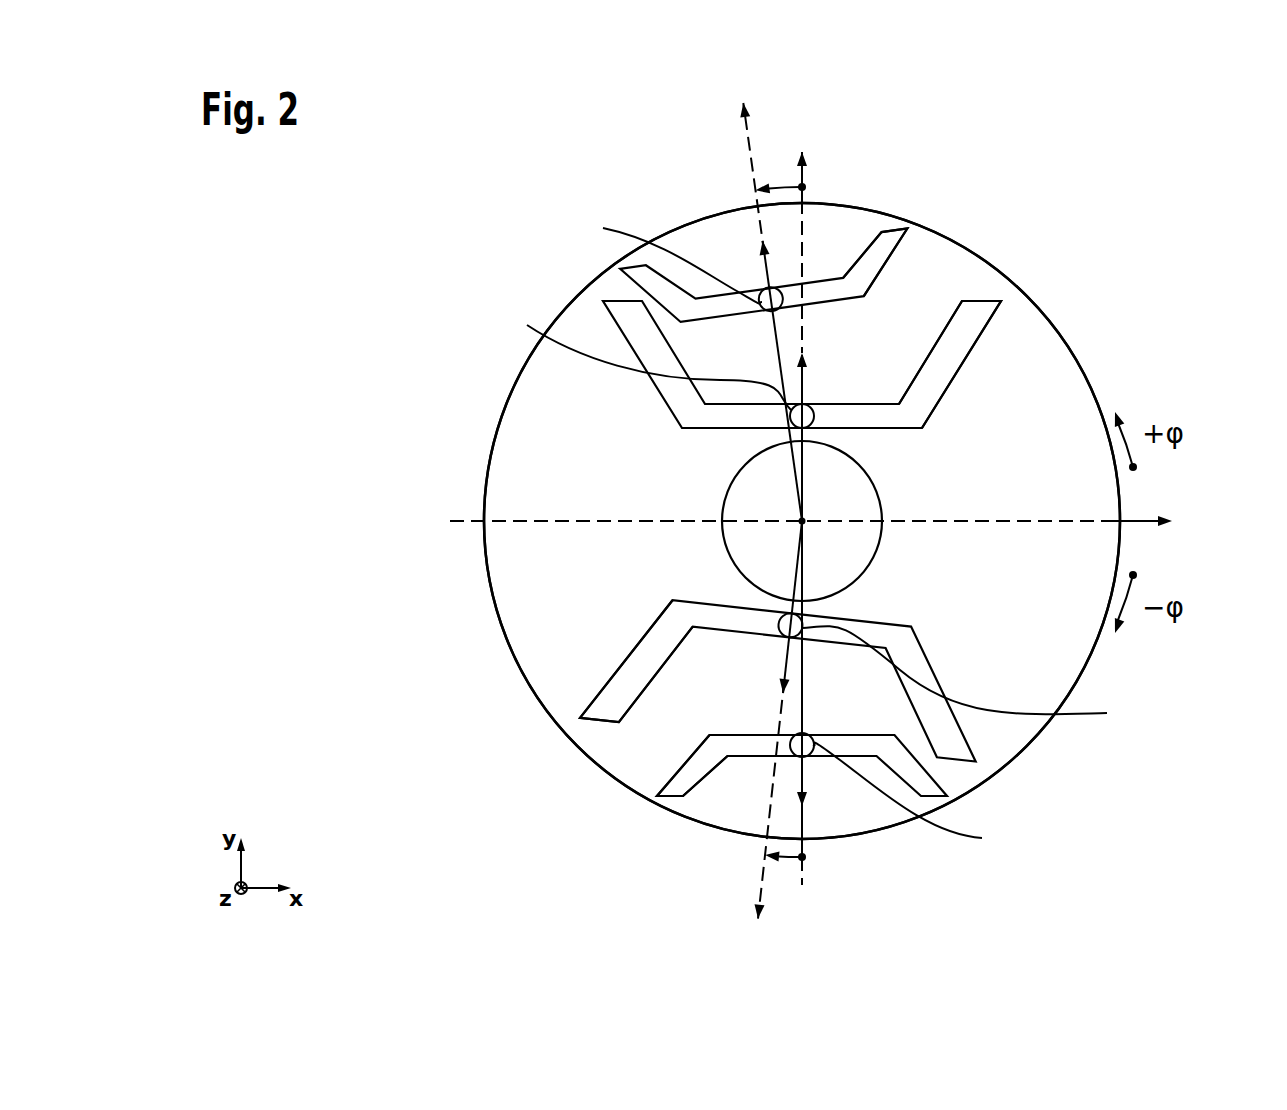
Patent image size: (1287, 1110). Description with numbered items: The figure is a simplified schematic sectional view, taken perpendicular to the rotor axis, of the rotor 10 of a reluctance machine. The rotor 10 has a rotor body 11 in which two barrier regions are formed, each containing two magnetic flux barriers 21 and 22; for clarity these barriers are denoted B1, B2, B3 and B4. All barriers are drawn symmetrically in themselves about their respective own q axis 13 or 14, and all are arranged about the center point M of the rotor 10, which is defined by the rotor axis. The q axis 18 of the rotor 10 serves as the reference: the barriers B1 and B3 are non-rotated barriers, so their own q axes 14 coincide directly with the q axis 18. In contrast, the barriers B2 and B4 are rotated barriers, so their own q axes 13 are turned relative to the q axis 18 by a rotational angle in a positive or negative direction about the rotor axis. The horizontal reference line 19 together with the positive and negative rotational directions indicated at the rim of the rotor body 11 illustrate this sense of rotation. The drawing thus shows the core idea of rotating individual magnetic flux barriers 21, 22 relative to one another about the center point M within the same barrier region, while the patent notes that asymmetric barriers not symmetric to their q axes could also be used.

The rotor 10 is at (432, 232).
The rotor body 11 is at (540, 442).
The q axis of rotated magnetic flux barrier 13 is at (692, 888).
The q axis of non-rotated magnetic flux barrier 14 is at (806, 378).
The q axis of the rotor 18 is at (802, 187).
The horizontal reference axis 19 is at (1138, 520).
The magnetic flux barrier 21 is at (893, 240).
The magnetic flux barrier 22 is at (953, 343).
The magnetic flux barrier B1 is at (960, 367).
The magnetic flux barrier B2 is at (888, 270).
The magnetic flux barrier B3 is at (700, 745).
The magnetic flux barrier B4 is at (643, 636).
The center point of the rotor M is at (800, 523).